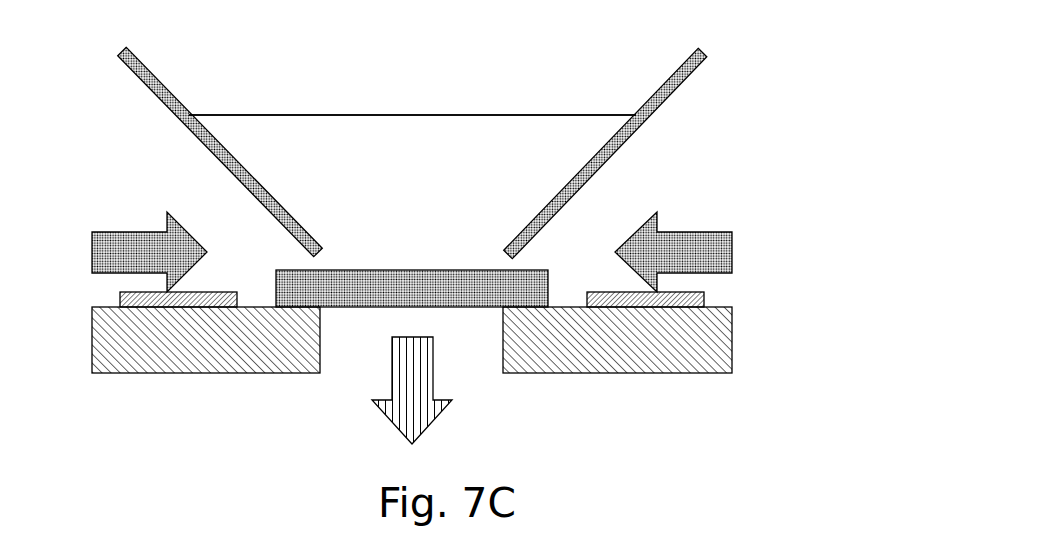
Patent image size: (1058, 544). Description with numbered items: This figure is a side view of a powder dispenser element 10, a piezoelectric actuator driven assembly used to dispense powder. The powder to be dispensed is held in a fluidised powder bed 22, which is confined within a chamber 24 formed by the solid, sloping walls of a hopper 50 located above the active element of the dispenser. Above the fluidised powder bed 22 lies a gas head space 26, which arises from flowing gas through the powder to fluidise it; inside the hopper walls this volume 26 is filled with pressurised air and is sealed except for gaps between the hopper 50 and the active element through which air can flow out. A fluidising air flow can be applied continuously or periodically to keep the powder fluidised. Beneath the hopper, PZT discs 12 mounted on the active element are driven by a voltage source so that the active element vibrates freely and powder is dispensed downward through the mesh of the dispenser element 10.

The powder dispenser element 10 is at (320, 398).
The PZT disc 12 is at (732, 300).
The fluidised powder bed 22 is at (412, 148).
The chamber 24 is at (605, 150).
The gas head space 26 is at (412, 89).
The hopper 50 is at (493, 144).